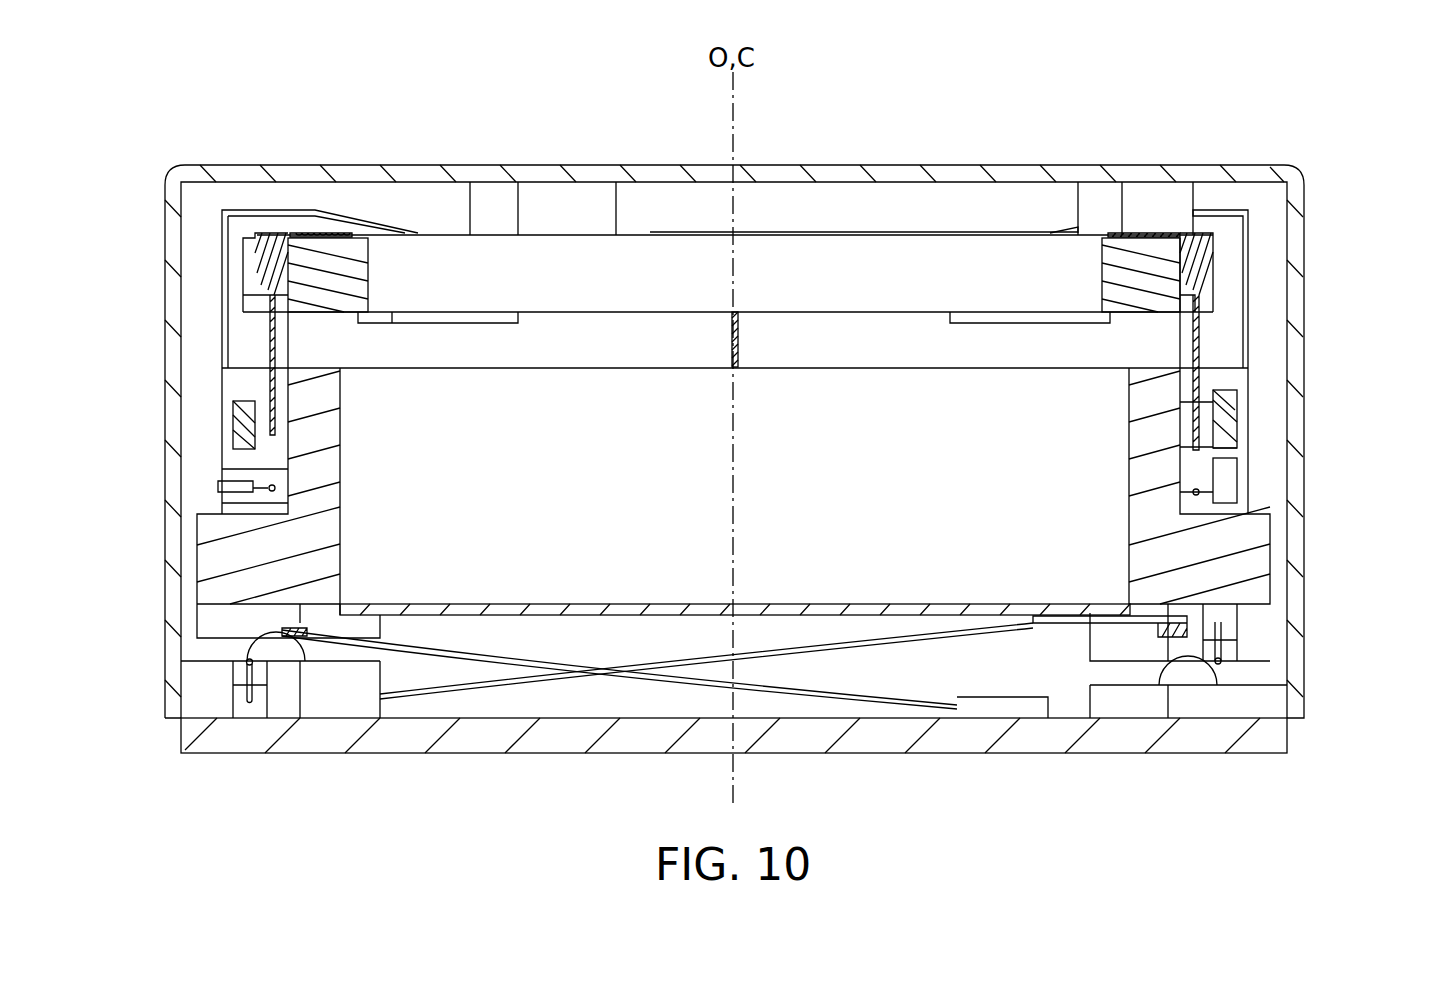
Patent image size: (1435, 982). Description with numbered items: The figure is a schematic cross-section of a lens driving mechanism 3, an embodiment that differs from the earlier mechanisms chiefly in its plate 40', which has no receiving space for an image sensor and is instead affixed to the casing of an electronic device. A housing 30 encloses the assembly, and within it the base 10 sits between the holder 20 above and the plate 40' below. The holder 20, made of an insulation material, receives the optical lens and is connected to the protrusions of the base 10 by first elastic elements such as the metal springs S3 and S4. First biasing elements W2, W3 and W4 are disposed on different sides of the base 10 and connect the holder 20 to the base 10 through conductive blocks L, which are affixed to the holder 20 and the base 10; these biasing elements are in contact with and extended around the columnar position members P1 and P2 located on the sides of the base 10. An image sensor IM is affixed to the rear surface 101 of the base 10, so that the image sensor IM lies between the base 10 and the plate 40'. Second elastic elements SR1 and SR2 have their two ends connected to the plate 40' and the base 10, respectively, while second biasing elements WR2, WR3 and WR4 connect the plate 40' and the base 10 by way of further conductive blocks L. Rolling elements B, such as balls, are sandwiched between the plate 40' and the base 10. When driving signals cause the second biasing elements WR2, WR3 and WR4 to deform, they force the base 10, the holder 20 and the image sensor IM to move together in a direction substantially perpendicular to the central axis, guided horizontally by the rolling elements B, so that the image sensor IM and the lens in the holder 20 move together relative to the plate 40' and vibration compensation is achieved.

The lens driving mechanism 3 is at (88, 72).
The base 10 is at (227, 552).
The rear surface 101 is at (300, 622).
The holder 20 is at (565, 275).
The housing 30 is at (1292, 552).
The plate 40' is at (734, 773).
The rolling element B is at (290, 650).
The image sensor IM is at (795, 610).
The conductive block L is at (262, 270).
The position member P1 is at (237, 428).
The position member P2 is at (1225, 480).
The first elastic element S3 is at (1148, 235).
The first elastic element S4 is at (333, 234).
The second elastic element SR1 is at (1125, 625).
The second elastic element SR2 is at (870, 690).
The first biasing element W2 is at (1200, 343).
The first biasing element W3 is at (737, 340).
The first biasing element W4 is at (270, 345).
The second biasing element WR2 is at (1230, 655).
The second biasing element WR3 is at (470, 690).
The second biasing element WR4 is at (245, 678).